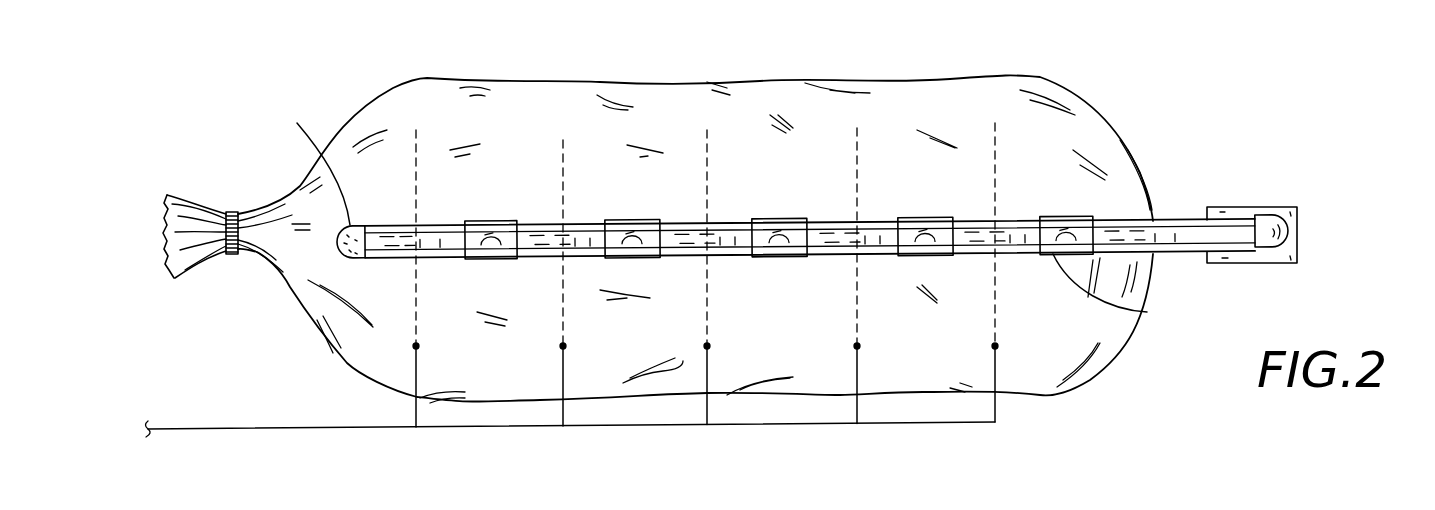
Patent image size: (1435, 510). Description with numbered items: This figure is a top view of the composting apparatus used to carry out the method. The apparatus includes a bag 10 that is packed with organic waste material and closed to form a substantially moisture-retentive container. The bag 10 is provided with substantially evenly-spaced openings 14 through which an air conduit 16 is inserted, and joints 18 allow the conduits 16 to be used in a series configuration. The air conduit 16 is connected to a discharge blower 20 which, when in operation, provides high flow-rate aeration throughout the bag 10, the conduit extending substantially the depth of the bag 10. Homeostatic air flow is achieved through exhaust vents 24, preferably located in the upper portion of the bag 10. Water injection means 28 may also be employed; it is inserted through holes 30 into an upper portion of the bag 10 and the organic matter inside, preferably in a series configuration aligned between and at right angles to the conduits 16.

The bag 10 is at (393, 88).
The openings 14 is at (500, 229).
The air conduit 16 is at (1184, 221).
The joints 18 is at (1167, 313).
The discharge blower 20 is at (1297, 206).
The exhaust vents 24 is at (988, 232).
The water injection means 28 is at (353, 425).
The holes 30 is at (857, 346).